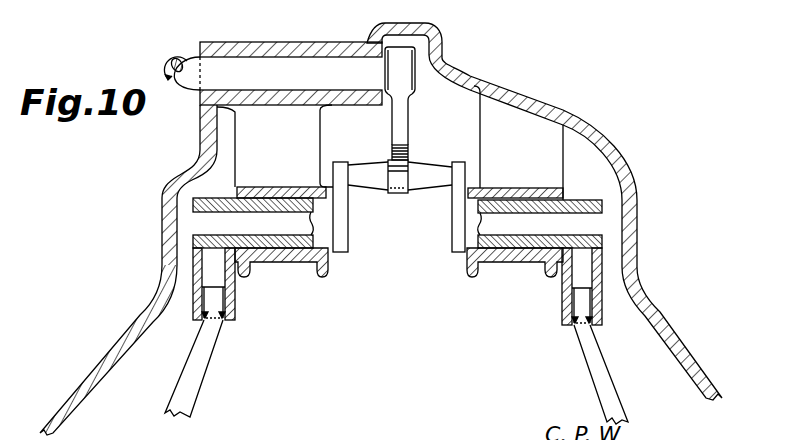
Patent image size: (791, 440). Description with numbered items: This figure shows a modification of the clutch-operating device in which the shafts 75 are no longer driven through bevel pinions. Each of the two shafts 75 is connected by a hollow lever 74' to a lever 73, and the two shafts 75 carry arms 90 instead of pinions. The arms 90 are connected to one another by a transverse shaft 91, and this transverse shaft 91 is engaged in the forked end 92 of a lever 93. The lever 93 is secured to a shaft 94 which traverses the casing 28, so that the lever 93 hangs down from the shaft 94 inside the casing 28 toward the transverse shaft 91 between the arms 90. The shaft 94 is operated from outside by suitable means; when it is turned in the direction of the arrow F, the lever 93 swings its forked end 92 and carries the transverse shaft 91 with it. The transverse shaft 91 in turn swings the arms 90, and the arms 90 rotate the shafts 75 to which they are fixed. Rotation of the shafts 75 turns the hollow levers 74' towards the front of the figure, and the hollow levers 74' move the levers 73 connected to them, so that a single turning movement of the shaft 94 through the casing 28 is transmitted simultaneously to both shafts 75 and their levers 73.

The casing 28 is at (553, 110).
The shaft 94 is at (275, 65).
The arrow F is at (181, 57).
The lever 93 is at (398, 135).
The forked end 92 is at (402, 178).
The transverse shaft 91 is at (418, 180).
The arms 90 is at (343, 245).
The shafts 75 is at (288, 238).
The hollow levers 74' is at (397, 296).
The levers 73 is at (200, 377).